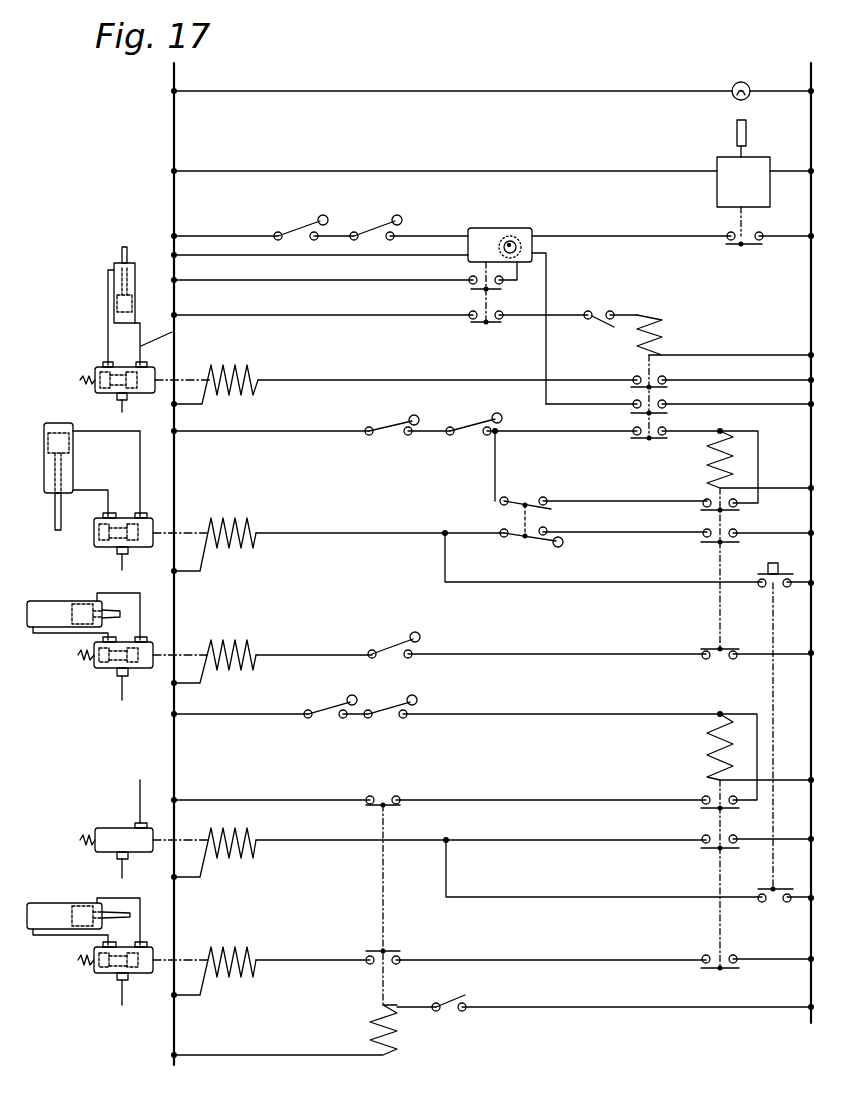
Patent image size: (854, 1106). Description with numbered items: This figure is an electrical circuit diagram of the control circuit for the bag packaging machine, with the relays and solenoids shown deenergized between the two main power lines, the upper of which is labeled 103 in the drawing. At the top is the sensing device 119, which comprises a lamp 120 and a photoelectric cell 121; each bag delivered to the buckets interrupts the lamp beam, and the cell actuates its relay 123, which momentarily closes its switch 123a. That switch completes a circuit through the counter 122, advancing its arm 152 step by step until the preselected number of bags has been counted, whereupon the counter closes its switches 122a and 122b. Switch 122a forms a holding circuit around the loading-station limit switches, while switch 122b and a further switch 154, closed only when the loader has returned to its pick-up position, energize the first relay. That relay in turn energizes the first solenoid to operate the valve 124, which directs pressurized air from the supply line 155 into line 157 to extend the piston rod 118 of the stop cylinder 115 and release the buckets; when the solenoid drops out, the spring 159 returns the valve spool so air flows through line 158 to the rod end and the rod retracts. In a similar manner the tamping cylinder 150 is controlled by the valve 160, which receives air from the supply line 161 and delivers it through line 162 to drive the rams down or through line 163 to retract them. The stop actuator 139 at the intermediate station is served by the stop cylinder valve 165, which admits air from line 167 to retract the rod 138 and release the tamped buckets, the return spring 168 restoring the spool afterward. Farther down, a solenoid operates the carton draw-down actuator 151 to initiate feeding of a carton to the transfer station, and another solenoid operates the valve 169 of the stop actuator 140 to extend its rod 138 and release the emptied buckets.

The power supply line 103 is at (628, 90).
The piston rod 118 is at (120, 254).
The pneumatic cylinder 115 is at (114, 288).
The line 158 is at (108, 332).
The valve 124 is at (97, 364).
The spring 159 is at (125, 377).
The line 157 is at (176, 334).
The supply line 155 is at (114, 404).
The tamping cylinder 150 is at (44, 465).
The line 163 is at (108, 500).
The line 162 is at (142, 500).
The valve 160 is at (149, 523).
The supply line 161 is at (124, 564).
The stop actuator 139 is at (52, 598).
The rod 138 is at (110, 610).
The return spring 168 is at (80, 658).
The stop cylinder valve 165 is at (140, 668).
The line 167 is at (122, 690).
The carton draw-down actuator 151 is at (112, 826).
The stop actuator 140 is at (56, 906).
The valve 169 is at (105, 968).
The sensing device 119 is at (716, 148).
The lamp 120 is at (740, 82).
The photoelectric cell 121 is at (737, 125).
The counter 122 is at (486, 230).
The counter switch 122a is at (478, 281).
The counter switch 122b is at (478, 313).
The relay 123 is at (717, 190).
The switch 123a is at (730, 232).
The arm 152 is at (512, 236).
The switch 154 is at (602, 306).